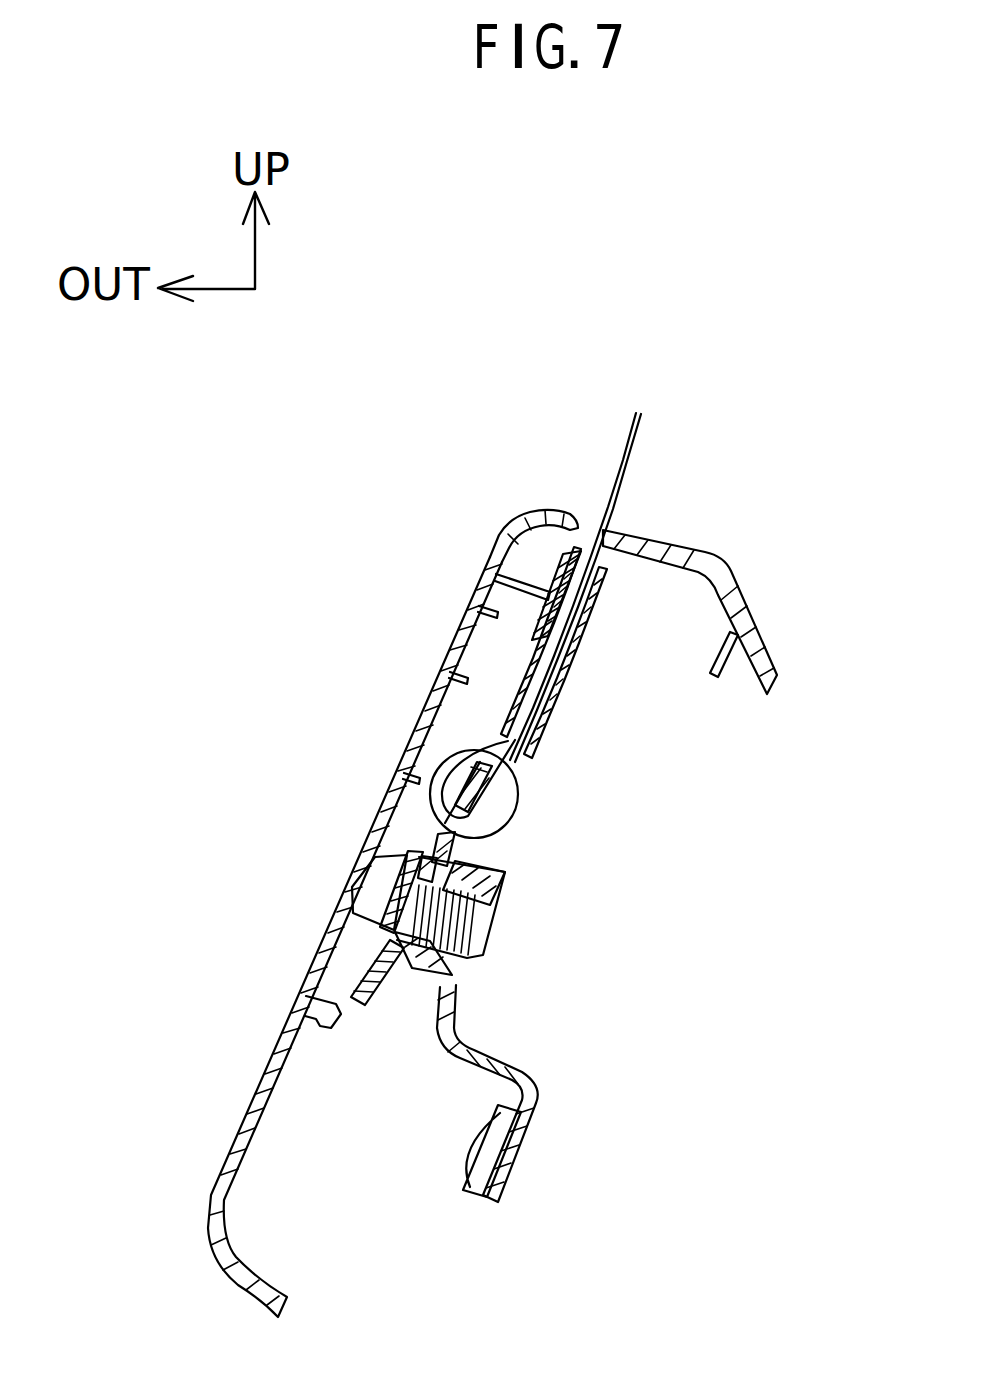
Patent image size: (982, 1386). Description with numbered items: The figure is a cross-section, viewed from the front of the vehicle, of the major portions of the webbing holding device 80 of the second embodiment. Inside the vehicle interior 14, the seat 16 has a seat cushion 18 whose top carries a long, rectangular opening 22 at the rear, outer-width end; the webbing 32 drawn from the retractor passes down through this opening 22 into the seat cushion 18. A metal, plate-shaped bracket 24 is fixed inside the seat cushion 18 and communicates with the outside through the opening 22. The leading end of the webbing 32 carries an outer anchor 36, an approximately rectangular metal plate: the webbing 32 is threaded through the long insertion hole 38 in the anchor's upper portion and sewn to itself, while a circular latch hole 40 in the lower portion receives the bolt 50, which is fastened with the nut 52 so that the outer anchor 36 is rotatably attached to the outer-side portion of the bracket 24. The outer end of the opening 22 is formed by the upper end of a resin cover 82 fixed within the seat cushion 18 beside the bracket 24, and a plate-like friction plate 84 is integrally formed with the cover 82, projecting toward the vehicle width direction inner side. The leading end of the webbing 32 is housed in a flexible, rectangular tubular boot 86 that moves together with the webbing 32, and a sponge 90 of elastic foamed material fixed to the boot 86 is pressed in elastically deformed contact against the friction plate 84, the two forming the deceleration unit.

The vehicle interior 14 is at (806, 372).
The seat 16 is at (719, 584).
The seat cushion 18 is at (682, 541).
The opening 22 is at (575, 527).
The bracket 24 is at (463, 1063).
The webbing 32 is at (644, 424).
The outer anchor 36 is at (492, 780).
The insertion hole 38 is at (463, 823).
The latch hole 40 is at (373, 884).
The bolt 50 is at (373, 897).
The nut 52 is at (427, 977).
The webbing holding device 80 is at (483, 316).
The cover 82 is at (421, 697).
The friction plate 84 is at (538, 585).
The boot 86 is at (562, 697).
The sponge 90 is at (537, 622).